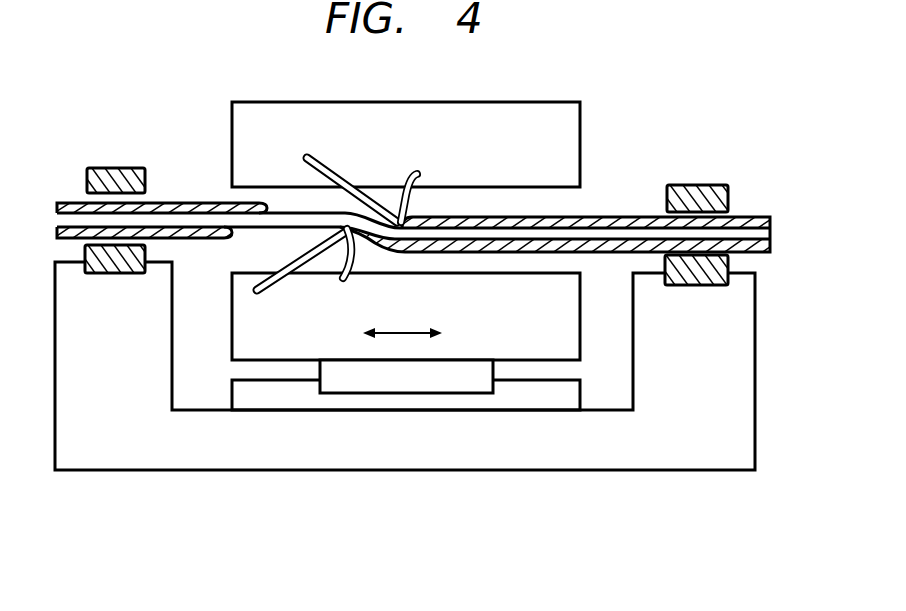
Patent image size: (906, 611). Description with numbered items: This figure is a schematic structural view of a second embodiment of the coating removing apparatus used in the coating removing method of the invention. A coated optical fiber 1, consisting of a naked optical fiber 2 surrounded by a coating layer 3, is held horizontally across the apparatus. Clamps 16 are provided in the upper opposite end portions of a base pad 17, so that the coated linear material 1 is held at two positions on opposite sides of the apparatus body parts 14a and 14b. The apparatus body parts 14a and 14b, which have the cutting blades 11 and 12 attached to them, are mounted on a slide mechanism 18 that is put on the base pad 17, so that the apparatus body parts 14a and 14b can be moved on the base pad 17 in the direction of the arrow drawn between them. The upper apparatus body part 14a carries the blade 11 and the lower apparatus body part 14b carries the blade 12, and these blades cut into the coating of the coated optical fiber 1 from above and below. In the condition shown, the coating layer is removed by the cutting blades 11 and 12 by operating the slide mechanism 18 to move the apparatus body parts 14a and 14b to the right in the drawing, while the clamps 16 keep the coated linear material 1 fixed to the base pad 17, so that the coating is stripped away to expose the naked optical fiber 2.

The coated optical fiber 1 is at (616, 205).
The naked optical fiber 2 is at (210, 216).
The coating layer 3 is at (760, 220).
The cutting blade 11 is at (337, 170).
The cutting blade 12 is at (330, 245).
The apparatus body part 14a is at (538, 125).
The apparatus body part 14b is at (578, 333).
The clamps 16 is at (112, 168).
The base pad 17 is at (428, 457).
The slide mechanism 18 is at (347, 382).